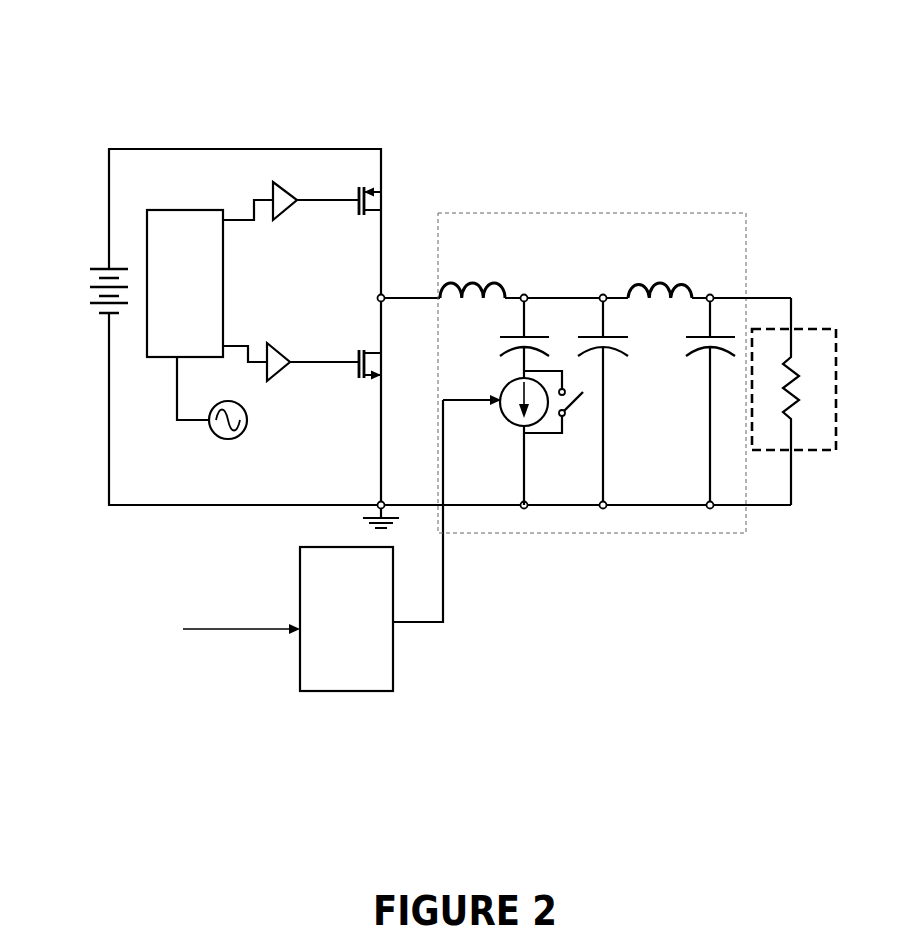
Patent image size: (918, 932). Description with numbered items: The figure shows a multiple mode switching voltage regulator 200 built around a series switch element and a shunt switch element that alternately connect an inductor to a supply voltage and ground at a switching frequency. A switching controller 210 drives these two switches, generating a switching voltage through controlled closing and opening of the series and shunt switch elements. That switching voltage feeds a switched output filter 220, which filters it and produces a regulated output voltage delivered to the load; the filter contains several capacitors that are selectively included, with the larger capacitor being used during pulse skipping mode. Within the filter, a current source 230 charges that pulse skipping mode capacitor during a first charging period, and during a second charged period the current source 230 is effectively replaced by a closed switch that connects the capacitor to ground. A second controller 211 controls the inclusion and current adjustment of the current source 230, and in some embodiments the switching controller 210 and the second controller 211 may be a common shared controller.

The multiple mode switching voltage regulator 200 is at (437, 110).
The switching controller 210 is at (167, 351).
The second controller 211 is at (332, 639).
The switched output filter 220 is at (562, 275).
The current source 230 is at (494, 377).